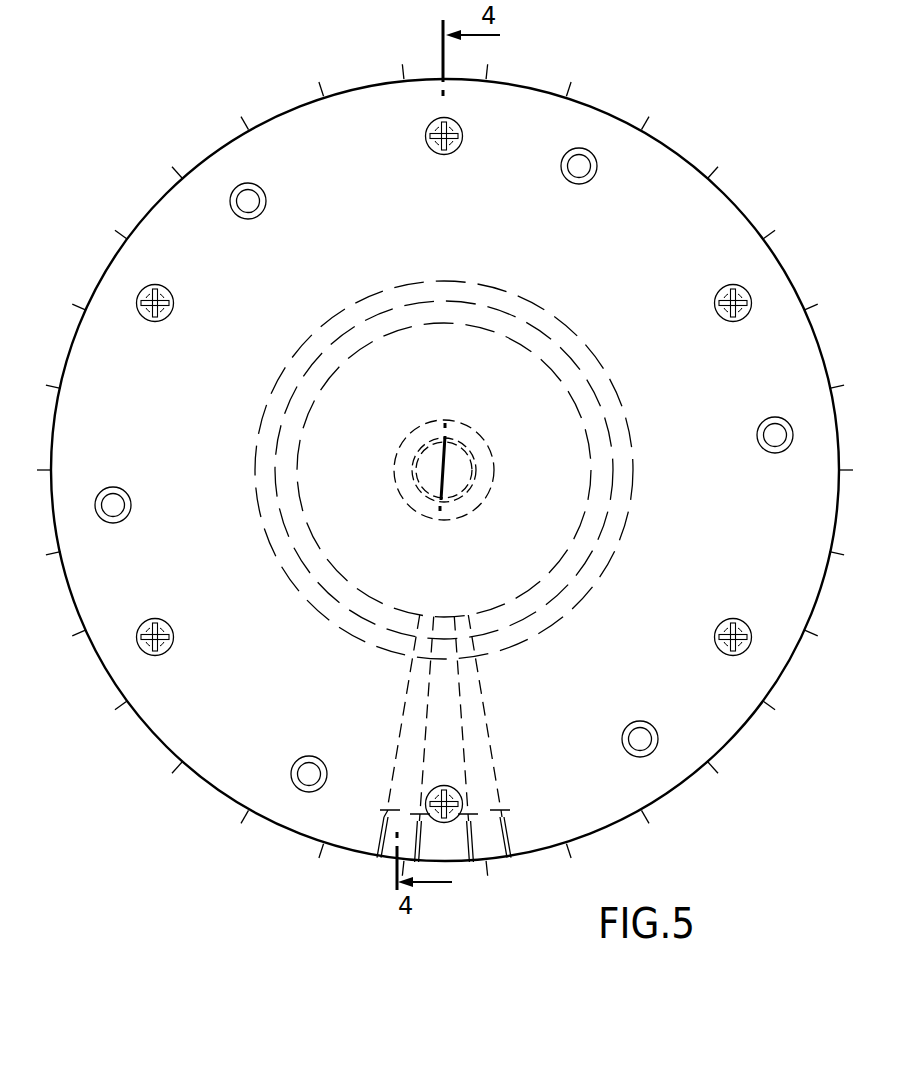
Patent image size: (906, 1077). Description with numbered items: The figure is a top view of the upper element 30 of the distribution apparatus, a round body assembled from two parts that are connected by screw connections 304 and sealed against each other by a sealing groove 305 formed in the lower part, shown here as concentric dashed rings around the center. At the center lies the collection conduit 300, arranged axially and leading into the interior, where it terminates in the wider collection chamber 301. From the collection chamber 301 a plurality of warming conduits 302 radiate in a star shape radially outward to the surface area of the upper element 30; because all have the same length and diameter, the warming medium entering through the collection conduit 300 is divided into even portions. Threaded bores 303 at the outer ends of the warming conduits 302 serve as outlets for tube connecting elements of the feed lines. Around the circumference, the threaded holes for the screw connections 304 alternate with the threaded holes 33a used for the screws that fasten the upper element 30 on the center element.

The upper element 30 is at (699, 133).
The threaded holes 33a is at (590, 182).
The collection conduit 300 is at (476, 497).
The collection chamber 301 is at (507, 409).
The warming conduits 302 is at (406, 698).
The threaded bores 303 is at (385, 823).
The screw connections 304 is at (461, 146).
The sealing groove 305 is at (527, 313).